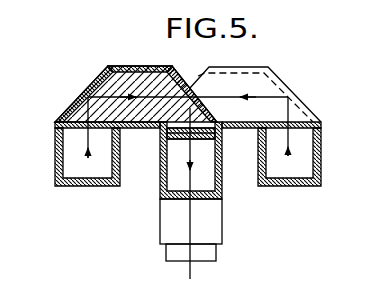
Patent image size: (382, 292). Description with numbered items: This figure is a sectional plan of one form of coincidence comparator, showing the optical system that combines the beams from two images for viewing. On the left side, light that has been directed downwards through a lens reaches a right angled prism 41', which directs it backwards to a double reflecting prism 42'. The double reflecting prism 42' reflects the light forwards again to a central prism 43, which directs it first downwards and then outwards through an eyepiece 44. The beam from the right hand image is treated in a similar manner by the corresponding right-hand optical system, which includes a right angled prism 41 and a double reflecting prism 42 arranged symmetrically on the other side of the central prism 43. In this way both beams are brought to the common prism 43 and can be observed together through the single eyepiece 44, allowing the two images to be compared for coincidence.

The double reflecting prism 42' is at (136, 85).
The double reflecting prism 42 is at (255, 86).
The right angled prism 41' is at (66, 157).
The right angled prism 41 is at (307, 157).
The prism 43 is at (173, 179).
The eyepiece 44 is at (204, 221).